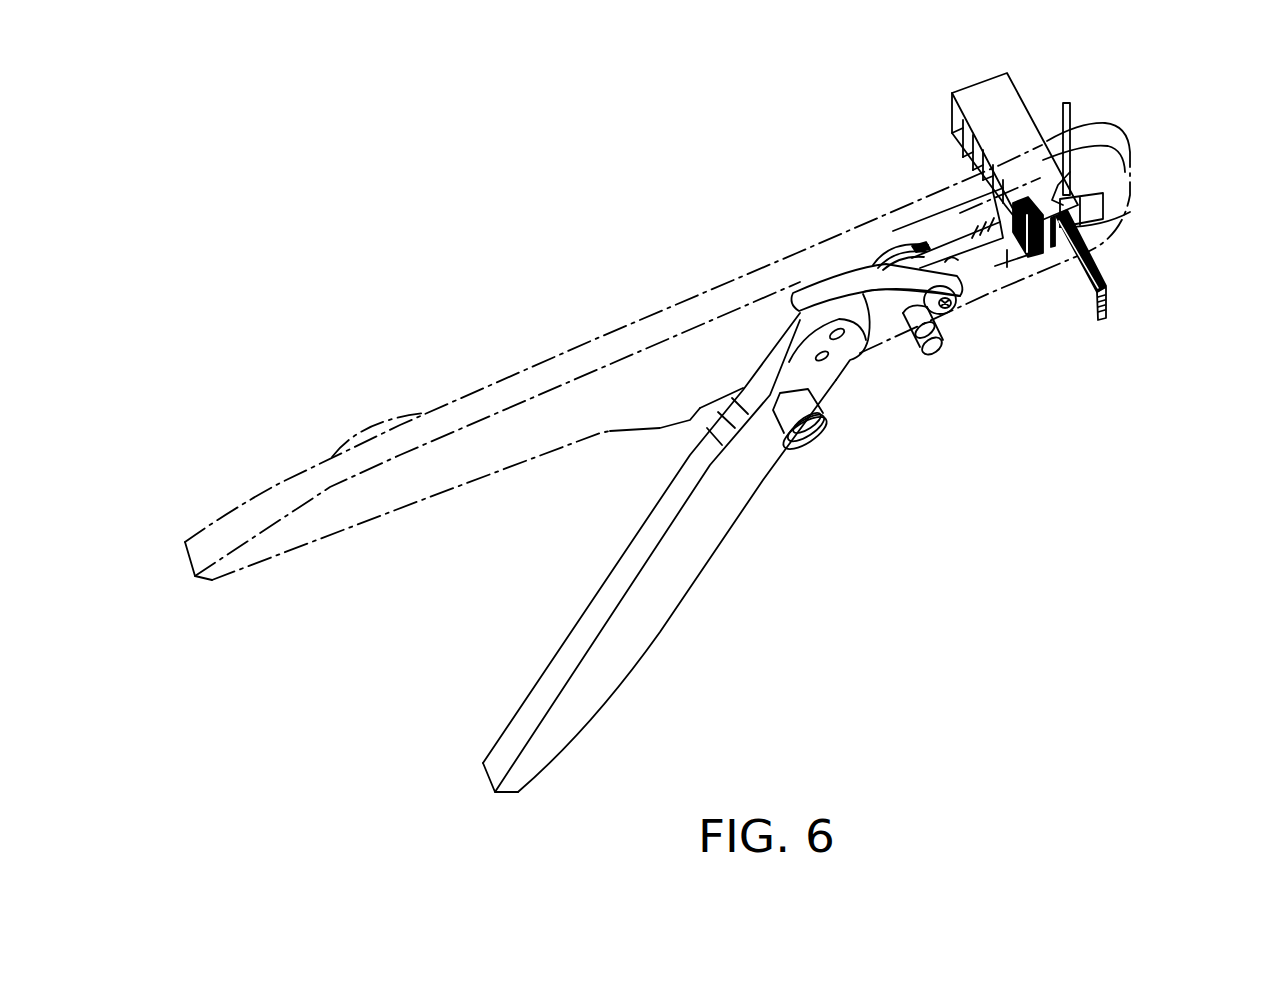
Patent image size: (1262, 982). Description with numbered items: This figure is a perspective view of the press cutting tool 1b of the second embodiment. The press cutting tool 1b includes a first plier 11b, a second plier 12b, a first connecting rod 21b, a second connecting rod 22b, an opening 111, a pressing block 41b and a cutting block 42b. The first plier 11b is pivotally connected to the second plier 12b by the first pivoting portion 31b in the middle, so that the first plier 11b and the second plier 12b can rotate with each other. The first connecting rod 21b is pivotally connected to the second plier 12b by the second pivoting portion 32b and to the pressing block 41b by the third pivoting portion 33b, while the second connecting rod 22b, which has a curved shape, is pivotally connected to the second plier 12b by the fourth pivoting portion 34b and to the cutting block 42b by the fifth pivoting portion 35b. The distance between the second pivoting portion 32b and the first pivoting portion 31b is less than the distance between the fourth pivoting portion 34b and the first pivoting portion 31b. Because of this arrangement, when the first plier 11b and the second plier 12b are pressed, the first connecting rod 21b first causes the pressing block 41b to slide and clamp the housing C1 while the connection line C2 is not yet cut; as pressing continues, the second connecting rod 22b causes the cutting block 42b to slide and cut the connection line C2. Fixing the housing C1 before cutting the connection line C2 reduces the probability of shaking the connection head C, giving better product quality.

The press cutting tool 1b is at (246, 160).
The first plier 11b is at (442, 414).
The second plier 12b is at (527, 718).
The first connecting rod 21b is at (873, 312).
The second connecting rod 22b is at (840, 277).
The first pivoting portion 31b is at (818, 447).
The second pivoting portion 32b is at (827, 358).
The third pivoting portion 33b is at (937, 352).
The fourth pivoting portion 34b is at (843, 337).
The fifth pivoting portion 35b is at (950, 308).
The pressing block 41b is at (925, 260).
The cutting block 42b is at (993, 225).
The opening 111 is at (1102, 212).
The housing C1 is at (1038, 255).
The connection line C2 is at (1105, 305).
The connection head C is at (1168, 396).